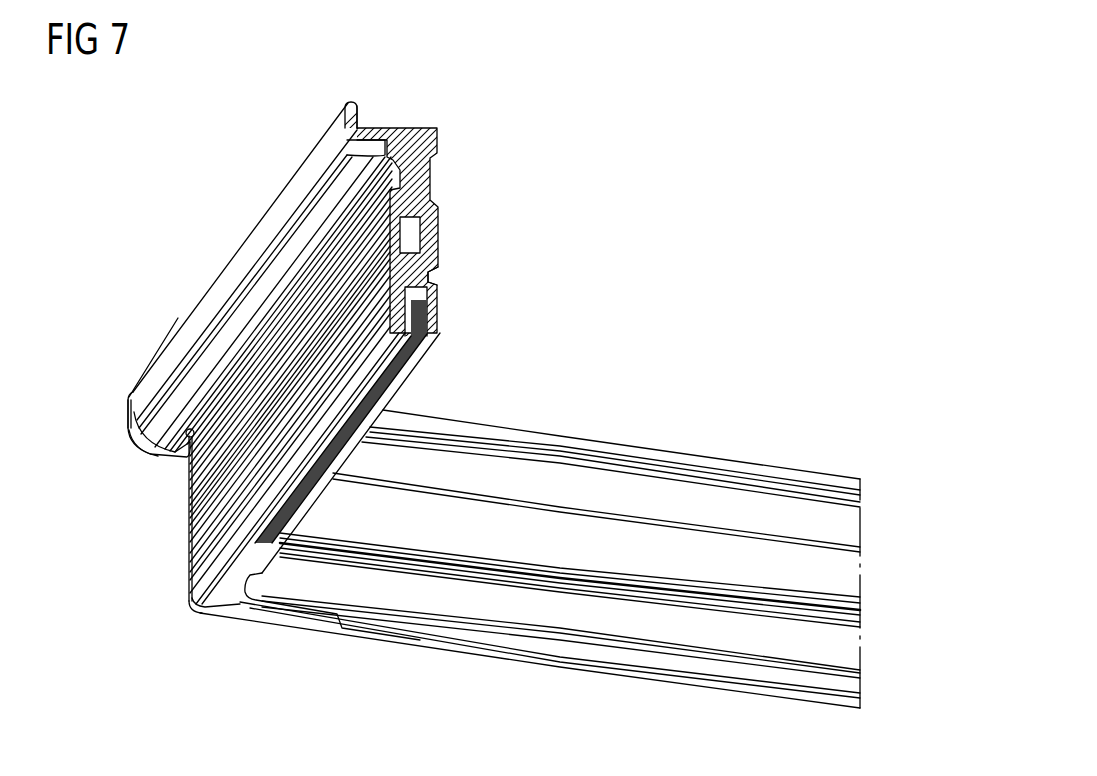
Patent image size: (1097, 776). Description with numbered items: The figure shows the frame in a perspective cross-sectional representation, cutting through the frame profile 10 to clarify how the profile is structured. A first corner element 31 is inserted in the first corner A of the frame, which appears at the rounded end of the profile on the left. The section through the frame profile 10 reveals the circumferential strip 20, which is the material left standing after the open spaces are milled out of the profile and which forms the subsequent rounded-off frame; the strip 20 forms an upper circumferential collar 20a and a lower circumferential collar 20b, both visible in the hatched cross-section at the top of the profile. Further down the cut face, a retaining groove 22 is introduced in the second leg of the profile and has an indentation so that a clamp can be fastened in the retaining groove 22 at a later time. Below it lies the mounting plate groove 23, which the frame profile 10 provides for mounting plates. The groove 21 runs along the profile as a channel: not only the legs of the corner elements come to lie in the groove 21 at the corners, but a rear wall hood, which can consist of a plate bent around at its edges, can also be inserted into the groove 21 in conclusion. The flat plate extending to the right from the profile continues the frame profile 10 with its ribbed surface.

The frame profile 10 is at (500, 150).
The circumferential strip 20 is at (345, 105).
The upper circumferential collar 20a is at (358, 112).
The lower circumferential collar 20b is at (347, 152).
The groove 21 is at (437, 297).
The retaining groove 22 is at (417, 233).
The mounting plate groove 23 is at (437, 273).
The first corner element 31 is at (242, 600).
The first corner A is at (128, 422).